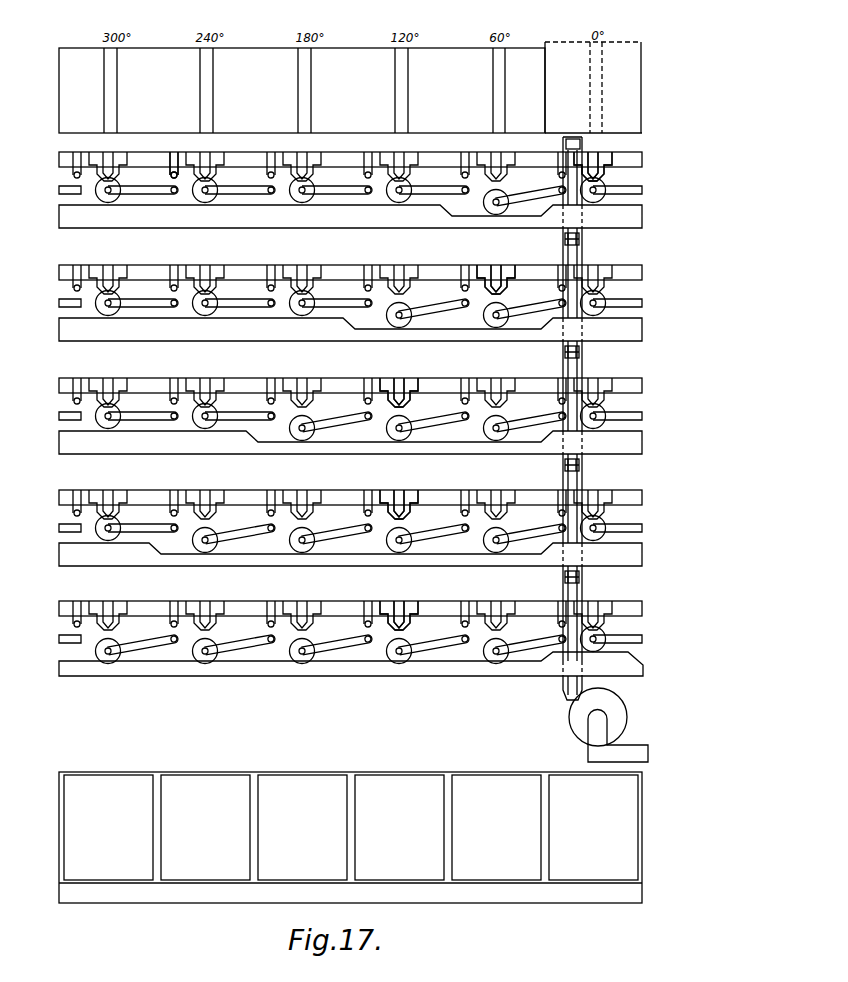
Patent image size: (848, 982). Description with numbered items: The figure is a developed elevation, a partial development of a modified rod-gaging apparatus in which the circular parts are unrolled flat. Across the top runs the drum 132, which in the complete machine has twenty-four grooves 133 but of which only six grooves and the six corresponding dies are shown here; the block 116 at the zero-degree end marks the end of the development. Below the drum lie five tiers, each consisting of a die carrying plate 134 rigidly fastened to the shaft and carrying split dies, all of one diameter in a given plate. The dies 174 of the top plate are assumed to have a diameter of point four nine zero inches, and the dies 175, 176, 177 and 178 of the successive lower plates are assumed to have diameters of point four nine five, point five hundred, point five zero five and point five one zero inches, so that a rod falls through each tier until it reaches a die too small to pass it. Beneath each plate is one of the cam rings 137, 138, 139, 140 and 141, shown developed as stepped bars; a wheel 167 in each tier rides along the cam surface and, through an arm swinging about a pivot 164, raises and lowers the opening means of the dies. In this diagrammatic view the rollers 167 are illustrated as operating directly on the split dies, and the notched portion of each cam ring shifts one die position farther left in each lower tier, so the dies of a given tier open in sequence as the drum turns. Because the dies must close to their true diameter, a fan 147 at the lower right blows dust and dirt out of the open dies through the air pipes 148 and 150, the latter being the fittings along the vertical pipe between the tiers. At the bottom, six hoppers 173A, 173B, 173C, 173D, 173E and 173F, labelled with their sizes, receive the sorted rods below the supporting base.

The zero-degree reference block 116 is at (637, 72).
The drum 132 is at (363, 47).
The grooves 133 is at (207, 53).
The plates 134 is at (641, 157).
The cam ring 137 is at (284, 219).
The cam ring 138 is at (192, 338).
The cam ring 139 is at (615, 447).
The cam ring 140 is at (298, 559).
The cam ring 141 is at (363, 673).
The fan 147 is at (578, 726).
The air pipe 148 is at (574, 592).
The air pipe 150 is at (580, 355).
The pivot 164 is at (175, 193).
The wheel 167 is at (100, 195).
The split die 174 is at (602, 168).
The split die 175 is at (488, 264).
The split die 176 is at (412, 380).
The split die 177 is at (413, 492).
The split die 178 is at (413, 599).
The hopper 173A is at (496, 827).
The hopper 173B is at (399, 827).
The hopper 173C is at (302, 827).
The hopper 173D is at (205, 827).
The hopper 173E is at (108, 827).
The hopper 173F is at (593, 827).